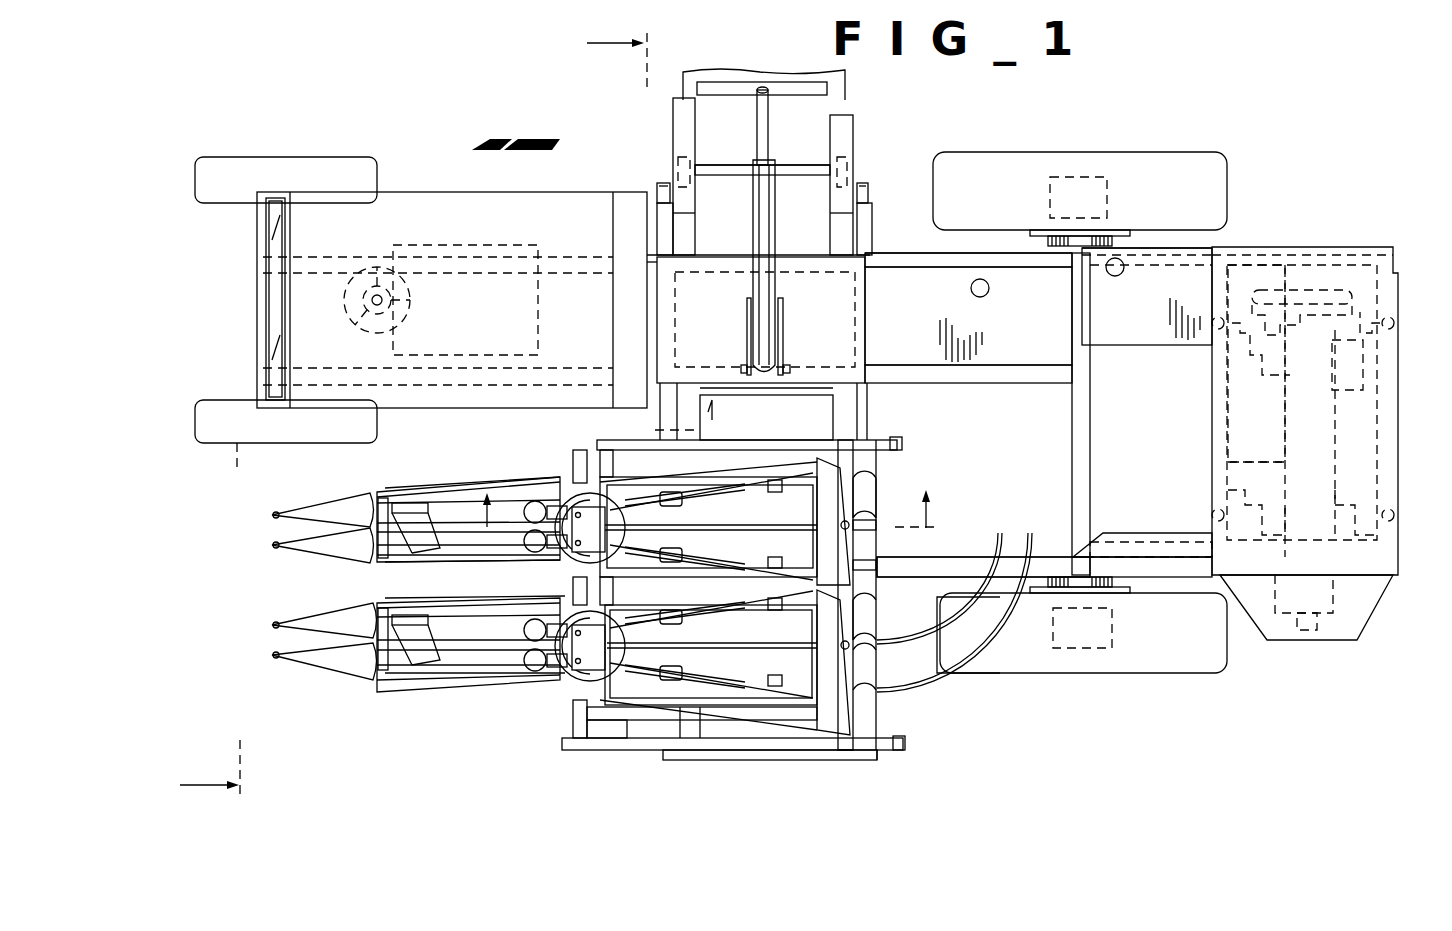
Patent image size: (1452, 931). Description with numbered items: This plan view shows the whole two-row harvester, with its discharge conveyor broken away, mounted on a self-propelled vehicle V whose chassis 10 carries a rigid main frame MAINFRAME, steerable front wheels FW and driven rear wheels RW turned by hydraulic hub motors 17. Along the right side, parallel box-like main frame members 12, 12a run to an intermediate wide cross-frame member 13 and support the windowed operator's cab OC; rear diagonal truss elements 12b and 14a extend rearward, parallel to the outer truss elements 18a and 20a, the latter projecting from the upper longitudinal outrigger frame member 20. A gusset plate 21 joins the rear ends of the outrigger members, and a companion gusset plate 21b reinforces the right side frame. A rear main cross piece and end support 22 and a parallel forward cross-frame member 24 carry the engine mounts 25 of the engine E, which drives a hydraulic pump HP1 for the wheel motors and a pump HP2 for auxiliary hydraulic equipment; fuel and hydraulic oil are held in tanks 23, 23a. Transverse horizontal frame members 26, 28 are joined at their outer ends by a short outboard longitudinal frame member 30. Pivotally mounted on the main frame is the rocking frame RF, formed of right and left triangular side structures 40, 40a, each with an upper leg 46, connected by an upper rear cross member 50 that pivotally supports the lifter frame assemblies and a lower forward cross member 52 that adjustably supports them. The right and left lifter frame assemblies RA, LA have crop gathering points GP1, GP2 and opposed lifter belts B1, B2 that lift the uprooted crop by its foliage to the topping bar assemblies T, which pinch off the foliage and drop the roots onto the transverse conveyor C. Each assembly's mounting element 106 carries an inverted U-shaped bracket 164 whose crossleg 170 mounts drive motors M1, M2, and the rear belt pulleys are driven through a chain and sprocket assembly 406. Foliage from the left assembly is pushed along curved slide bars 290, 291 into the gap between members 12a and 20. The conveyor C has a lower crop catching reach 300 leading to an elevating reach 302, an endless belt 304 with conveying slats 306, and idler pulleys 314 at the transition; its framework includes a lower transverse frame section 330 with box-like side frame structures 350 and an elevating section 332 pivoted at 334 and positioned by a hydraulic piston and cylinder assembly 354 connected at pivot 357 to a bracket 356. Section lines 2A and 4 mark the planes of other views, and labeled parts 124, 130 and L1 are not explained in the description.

The chassis 10 is at (1028, 386).
The main frame member 12 is at (915, 268).
The main frame member 12a is at (945, 360).
The rear diagonal truss element 12b is at (1203, 250).
The intermediate wide cross-frame member 13 is at (1072, 452).
The lower frame truss member 14a is at (1300, 247).
The hydraulic hub motor 17 is at (1050, 180).
The lower truss 18a is at (1362, 530).
The upper longitudinal outrigger frame member 20 is at (930, 562).
The truss 20a is at (1120, 556).
The gusset plate 21 is at (1118, 582).
The companion gusset plate 21b is at (1048, 241).
The rear main cross piece and end support 22 is at (1398, 350).
The tank 23 is at (1124, 315).
The tank 23a is at (1012, 337).
The forward cross-frame member 24 is at (1238, 398).
The engine mount 25 is at (1394, 322).
The transverse horizontal frame member 26 is at (648, 397).
The transverse horizontal frame member 28 is at (882, 438).
The short outboard longitudinal frame member 30 is at (790, 760).
The right side triangular frame structure 40 is at (565, 446).
The left side triangular frame structure 40a is at (555, 753).
The upper leg 46 is at (838, 440).
The upper rear cross member 50 is at (870, 718).
The lower forward cross member 52 is at (577, 732).
The mounting element 106 is at (750, 722).
The spring 124 is at (877, 535).
The rocking frame plate 130 is at (830, 478).
The inverted U-shaped bracket 164 is at (570, 470).
The crossleg 170 is at (588, 462).
The curved slide bar 290 is at (985, 680).
The curved slide bar 291 is at (937, 590).
The crop catching reach 300 is at (832, 250).
The elevating reach 302 is at (838, 108).
The endless belt 304 is at (683, 88).
The conveying slat 306 is at (797, 73).
The idler pulley 314 is at (678, 168).
The lower transverse frame section 330 is at (690, 380).
The elevating frame section 332 is at (672, 150).
The pivot 334 is at (657, 195).
The box-like frame structure 350 is at (660, 422).
The hydraulic piston and cylinder assembly 354 is at (750, 225).
The bracket 356 is at (770, 312).
The pivot 357 is at (786, 368).
The chain and sprocket assembly 406 is at (770, 530).
The section line 2A is at (412, 414).
The section line 4 is at (707, 505).
The lifter belt B1 is at (440, 568).
The lifter belt B2 is at (432, 483).
The transverse conveyor C is at (771, 430).
The engine E is at (1228, 467).
The front wheel FW is at (195, 180).
The crop gathering point GP1 is at (322, 540).
The crop gathering point GP2 is at (322, 506).
The hydraulic pump HP1 is at (1340, 640).
The hydraulic pump HP2 is at (1255, 318).
The lifter L1 is at (380, 494).
The left lifter frame assembly LA is at (262, 626).
The motor M1 is at (533, 554).
The motor M2 is at (533, 500).
The operator's cab OC is at (255, 272).
The right lifter frame assembly RA is at (262, 516).
The rocking frame RF is at (578, 755).
The rear wheel RW is at (1150, 160).
The topping bar assembly T is at (752, 510).
The self-propelled vehicle V is at (400, 188).
The main frame MAINFRAME is at (825, 762).